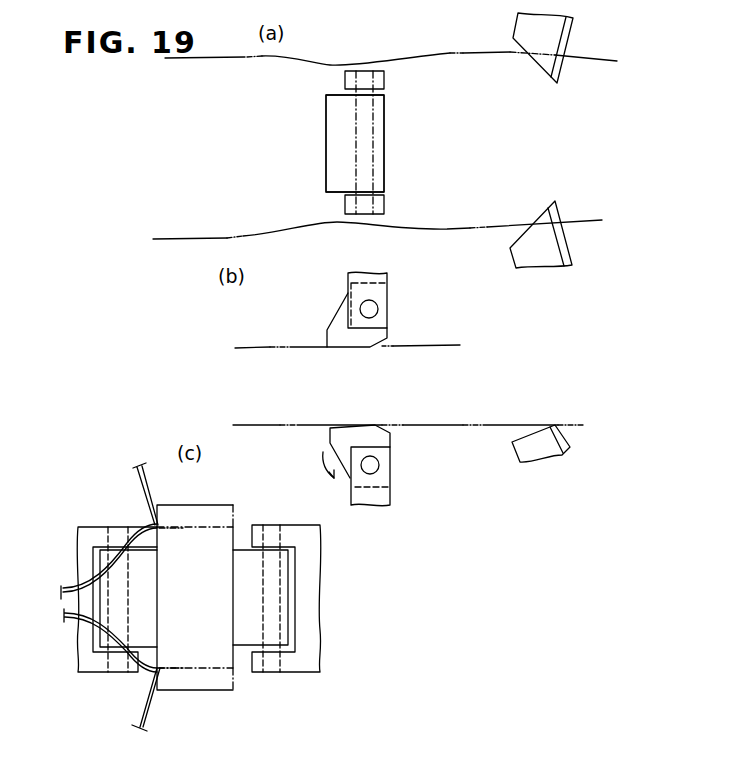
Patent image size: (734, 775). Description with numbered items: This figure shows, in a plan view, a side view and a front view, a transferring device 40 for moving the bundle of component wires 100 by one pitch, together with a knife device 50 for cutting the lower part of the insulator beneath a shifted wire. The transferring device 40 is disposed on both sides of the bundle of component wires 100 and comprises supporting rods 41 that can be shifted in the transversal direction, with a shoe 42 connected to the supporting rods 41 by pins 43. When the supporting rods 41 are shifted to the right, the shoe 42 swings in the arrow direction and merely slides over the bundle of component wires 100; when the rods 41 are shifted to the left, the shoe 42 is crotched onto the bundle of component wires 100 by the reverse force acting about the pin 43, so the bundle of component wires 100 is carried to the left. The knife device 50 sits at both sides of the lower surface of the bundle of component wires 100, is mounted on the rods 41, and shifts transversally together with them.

The transferring device 40 is at (385, 131).
The supporting rods 41 is at (384, 80).
The shoe 42 is at (336, 134).
The pin 43 is at (376, 312).
The knife device 50 is at (545, 31).
The bundle of component wires 100 is at (193, 638).